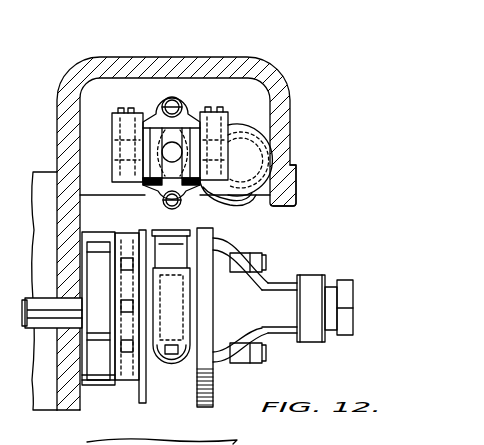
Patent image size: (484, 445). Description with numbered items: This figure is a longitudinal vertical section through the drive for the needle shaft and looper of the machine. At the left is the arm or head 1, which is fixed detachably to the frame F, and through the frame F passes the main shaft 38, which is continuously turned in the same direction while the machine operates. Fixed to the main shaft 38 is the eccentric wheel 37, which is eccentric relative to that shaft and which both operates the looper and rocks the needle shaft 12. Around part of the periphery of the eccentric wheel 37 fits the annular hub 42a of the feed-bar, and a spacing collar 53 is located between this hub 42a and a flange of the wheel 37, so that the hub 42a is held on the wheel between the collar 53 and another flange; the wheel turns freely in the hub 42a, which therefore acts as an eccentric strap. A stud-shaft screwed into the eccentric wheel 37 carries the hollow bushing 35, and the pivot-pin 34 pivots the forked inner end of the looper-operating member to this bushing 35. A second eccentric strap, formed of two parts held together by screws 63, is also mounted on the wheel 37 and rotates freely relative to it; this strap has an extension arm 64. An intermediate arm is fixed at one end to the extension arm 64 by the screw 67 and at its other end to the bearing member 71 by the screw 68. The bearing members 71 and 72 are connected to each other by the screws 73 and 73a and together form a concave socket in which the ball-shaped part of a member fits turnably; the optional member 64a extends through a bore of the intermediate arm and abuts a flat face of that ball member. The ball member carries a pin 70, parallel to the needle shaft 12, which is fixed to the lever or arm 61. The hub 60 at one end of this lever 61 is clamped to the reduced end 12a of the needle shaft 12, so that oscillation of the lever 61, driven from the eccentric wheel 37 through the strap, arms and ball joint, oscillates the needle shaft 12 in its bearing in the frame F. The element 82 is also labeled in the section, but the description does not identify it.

The arm or head 1 is at (38, 385).
The needle shaft 12 is at (268, 160).
The reduced left end 12a is at (274, 158).
The pivot-pin 34 is at (258, 253).
The hollow bushing 35 is at (277, 283).
The eccentric wheel 37 is at (88, 263).
The main shaft 38 is at (24, 333).
The annular hub 42a is at (100, 383).
The spacing collar 53 is at (135, 380).
The hub 60 is at (247, 148).
The lever or arm 61 is at (230, 207).
The screws 63 is at (183, 343).
The extension arm 64 is at (200, 222).
The optional member 64a is at (186, 130).
The screw 67 is at (150, 208).
The screw 68 is at (170, 98).
The pin 70 is at (161, 199).
The bearing member 71 is at (113, 125).
The bearing member 72 is at (113, 160).
The screw 73 is at (118, 110).
The screw 73a is at (228, 112).
The armature 82 is at (175, 377).
The frame F is at (249, 62).